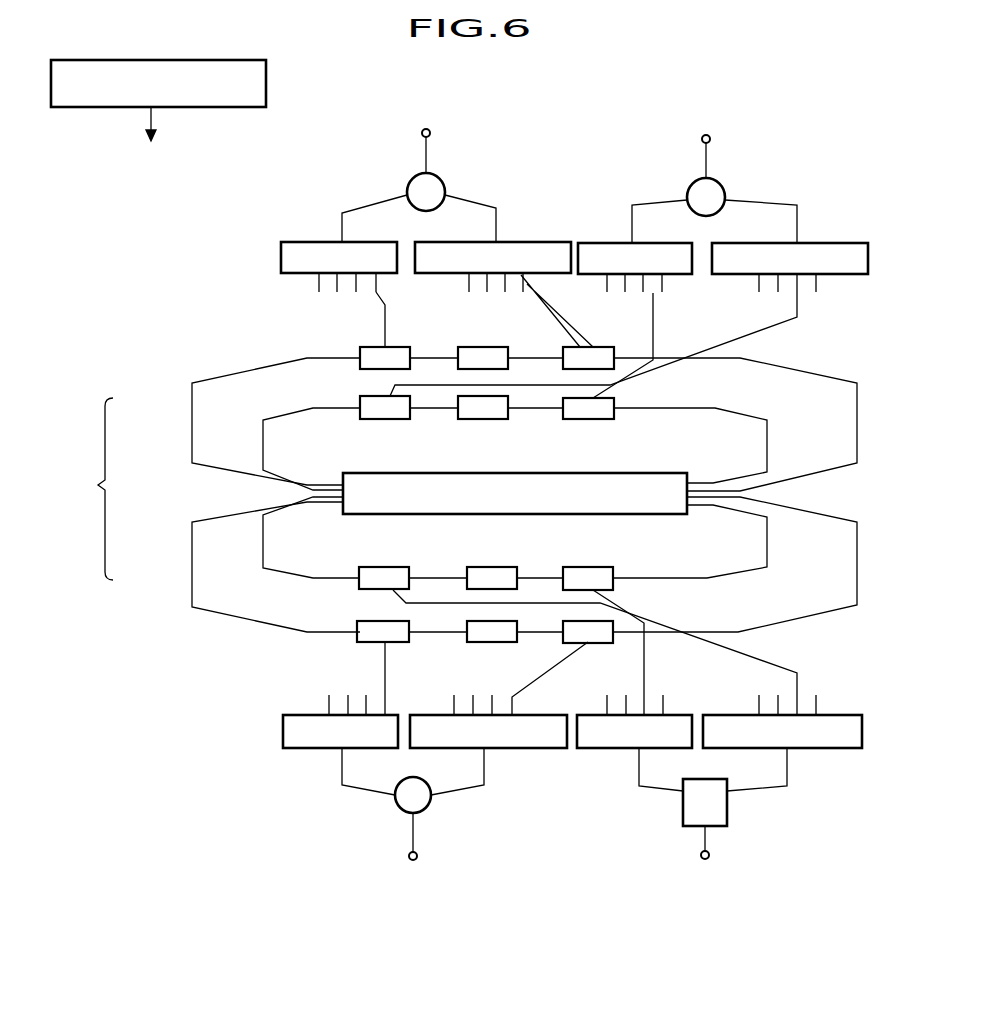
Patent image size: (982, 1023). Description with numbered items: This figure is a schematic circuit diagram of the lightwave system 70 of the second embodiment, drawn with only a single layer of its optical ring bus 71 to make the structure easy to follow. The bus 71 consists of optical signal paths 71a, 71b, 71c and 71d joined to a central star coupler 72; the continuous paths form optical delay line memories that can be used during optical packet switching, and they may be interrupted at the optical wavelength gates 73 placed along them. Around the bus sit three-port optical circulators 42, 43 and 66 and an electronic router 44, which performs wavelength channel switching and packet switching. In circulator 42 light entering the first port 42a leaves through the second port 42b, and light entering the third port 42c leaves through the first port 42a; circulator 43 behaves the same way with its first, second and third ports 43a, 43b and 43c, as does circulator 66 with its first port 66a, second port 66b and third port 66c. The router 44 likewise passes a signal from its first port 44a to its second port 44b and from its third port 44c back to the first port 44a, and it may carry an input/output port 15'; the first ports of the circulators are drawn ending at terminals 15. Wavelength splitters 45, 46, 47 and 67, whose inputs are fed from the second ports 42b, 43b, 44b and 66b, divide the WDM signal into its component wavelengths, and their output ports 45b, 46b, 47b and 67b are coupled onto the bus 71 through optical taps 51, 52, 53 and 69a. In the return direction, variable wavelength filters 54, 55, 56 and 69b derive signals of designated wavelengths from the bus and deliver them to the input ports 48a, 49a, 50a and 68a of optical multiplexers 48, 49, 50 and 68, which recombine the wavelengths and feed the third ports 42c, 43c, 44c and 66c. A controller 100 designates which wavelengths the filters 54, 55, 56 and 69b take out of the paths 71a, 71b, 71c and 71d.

The controller 100 is at (266, 80).
The lightwave system 70 is at (267, 286).
The optical terminal 15 is at (583, 489).
The input/output port 15' is at (728, 871).
The three-port optical circulator 42 is at (443, 180).
The first port 42a is at (422, 152).
The second port 42b is at (393, 195).
The third port 42c is at (478, 200).
The three-port optical circulator 43 is at (723, 185).
The first port 43a is at (703, 160).
The second port 43b is at (676, 200).
The third port 43c is at (760, 200).
The wavelength splitter 45 is at (308, 242).
The output port 45b is at (378, 287).
The wavelength splitter 46 is at (612, 243).
The output port 46b is at (654, 300).
The optical multiplexer 48 is at (535, 242).
The input port 48a is at (540, 297).
The optical multiplexer 49 is at (845, 243).
The input port 49a is at (786, 323).
The optical tap 51 is at (370, 347).
The optical tap 52 is at (405, 419).
The optical tap 53 is at (378, 567).
The variable wavelength filter 54 is at (567, 347).
The variable wavelength filter 55 is at (592, 419).
The variable wavelength filter 56 is at (605, 567).
The optical wavelength gate 73 is at (478, 347).
The star coupler 72 is at (357, 473).
The optical signal bus 71 is at (95, 489).
The optical signal path 71a is at (192, 422).
The optical signal path 71b is at (262, 448).
The optical signal path 71c is at (192, 553).
The optical signal path 71d is at (262, 537).
The optical tap 69a is at (357, 638).
The variable wavelength filter 69b is at (602, 643).
The wavelength splitter 67 is at (283, 737).
The output port 67b is at (329, 705).
The optical multiplexer 68 is at (547, 715).
The input port 68a is at (546, 673).
The wavelength splitter 47 is at (598, 750).
The output port 47b is at (646, 698).
The optical multiplexer 50 is at (850, 715).
The input port 50a is at (800, 688).
The three-port optical circulator 66 is at (400, 808).
The coupler port 66a is at (412, 830).
The second port 66b is at (388, 793).
The third port 66c is at (453, 793).
The electronic router 44 is at (727, 812).
The first port 44a is at (702, 840).
The second port 44b is at (662, 790).
The third port 44c is at (767, 792).